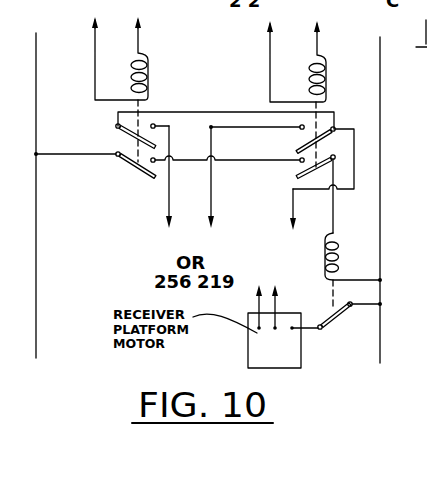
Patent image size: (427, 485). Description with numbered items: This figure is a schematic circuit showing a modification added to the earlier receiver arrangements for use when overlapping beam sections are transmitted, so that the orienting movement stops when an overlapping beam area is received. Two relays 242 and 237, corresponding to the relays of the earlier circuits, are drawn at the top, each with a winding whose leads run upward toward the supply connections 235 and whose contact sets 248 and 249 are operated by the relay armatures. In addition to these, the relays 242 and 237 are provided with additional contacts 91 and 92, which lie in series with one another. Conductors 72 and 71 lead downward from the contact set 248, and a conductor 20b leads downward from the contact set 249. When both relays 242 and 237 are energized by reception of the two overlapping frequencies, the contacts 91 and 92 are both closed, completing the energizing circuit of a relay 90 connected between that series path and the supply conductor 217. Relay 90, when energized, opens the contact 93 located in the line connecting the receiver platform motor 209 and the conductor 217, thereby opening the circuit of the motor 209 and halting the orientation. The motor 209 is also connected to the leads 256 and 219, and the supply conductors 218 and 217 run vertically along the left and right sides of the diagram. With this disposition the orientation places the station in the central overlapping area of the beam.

The power supply line 235 is at (206, 25).
The relay 242 is at (134, 67).
The relay 237 is at (312, 68).
The relay switch 249 is at (335, 128).
The relay switch 248 is at (116, 126).
The contact 91 is at (150, 178).
The contact 92 is at (296, 163).
The conductor 72 is at (169, 190).
The conductor 71 is at (211, 191).
The conductor 20b is at (298, 222).
The relay 90 is at (339, 257).
The conductor 256 is at (256, 298).
The conductor 219 is at (279, 298).
The motor 209 is at (274, 340).
The contact 93 is at (343, 309).
The supply line 218 is at (49, 206).
The conductor 217 is at (382, 211).